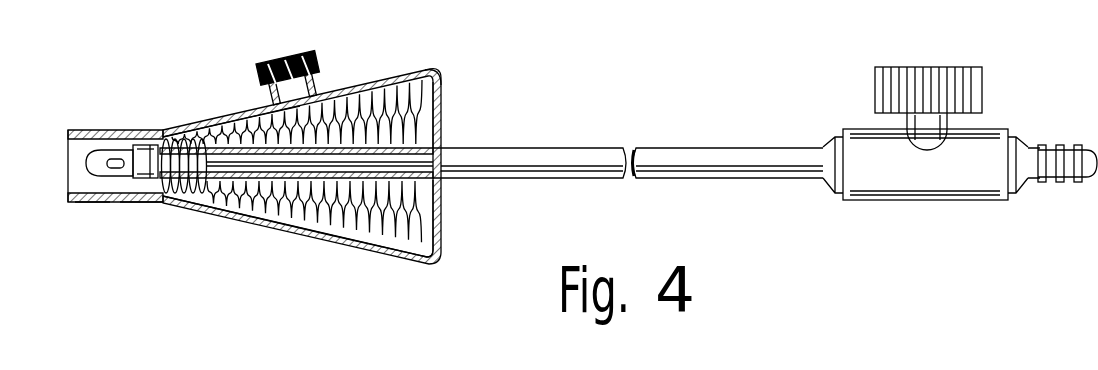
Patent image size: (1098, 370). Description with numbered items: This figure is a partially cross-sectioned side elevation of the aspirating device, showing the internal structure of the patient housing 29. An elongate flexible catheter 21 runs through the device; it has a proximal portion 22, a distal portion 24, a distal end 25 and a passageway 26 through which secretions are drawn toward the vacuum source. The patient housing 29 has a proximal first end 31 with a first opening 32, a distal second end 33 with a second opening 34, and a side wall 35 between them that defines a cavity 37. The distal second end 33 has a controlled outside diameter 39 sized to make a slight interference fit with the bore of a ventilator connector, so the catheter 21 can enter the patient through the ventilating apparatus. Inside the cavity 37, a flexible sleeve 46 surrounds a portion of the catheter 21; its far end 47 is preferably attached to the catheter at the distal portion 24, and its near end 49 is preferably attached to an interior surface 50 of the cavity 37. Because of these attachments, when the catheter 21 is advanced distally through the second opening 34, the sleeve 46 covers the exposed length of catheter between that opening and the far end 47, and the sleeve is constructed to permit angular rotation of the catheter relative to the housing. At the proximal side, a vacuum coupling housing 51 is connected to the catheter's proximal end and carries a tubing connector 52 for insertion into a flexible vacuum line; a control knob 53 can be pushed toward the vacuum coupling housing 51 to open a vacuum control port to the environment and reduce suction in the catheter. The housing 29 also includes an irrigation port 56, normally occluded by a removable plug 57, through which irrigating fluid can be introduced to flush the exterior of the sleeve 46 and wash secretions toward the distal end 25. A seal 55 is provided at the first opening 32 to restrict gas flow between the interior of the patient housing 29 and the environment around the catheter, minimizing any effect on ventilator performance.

The elongate flexible catheter 21 is at (556, 148).
The proximal portion 22 is at (652, 180).
The distal portion 24 is at (131, 145).
The distal end 25 is at (96, 150).
The passageway 26 is at (355, 170).
The patient housing 29 is at (378, 80).
The proximal first end 31 is at (410, 264).
The first opening 32 is at (445, 182).
The distal second end 33 is at (145, 204).
The second opening 34 is at (80, 176).
The side wall 35 is at (245, 226).
The cavity 37 is at (255, 116).
The controlled outside diameter 39 is at (85, 204).
The flexible sleeve 46 is at (312, 215).
The far end 47 is at (166, 200).
The near end 49 is at (443, 234).
The interior surface 50 is at (442, 74).
The vacuum coupling housing 51 is at (968, 201).
The tubing connector 52 is at (1057, 183).
The control knob 53 is at (872, 92).
The seal 55 is at (441, 130).
The irrigation port 56 is at (318, 72).
The removable plug 57 is at (292, 50).